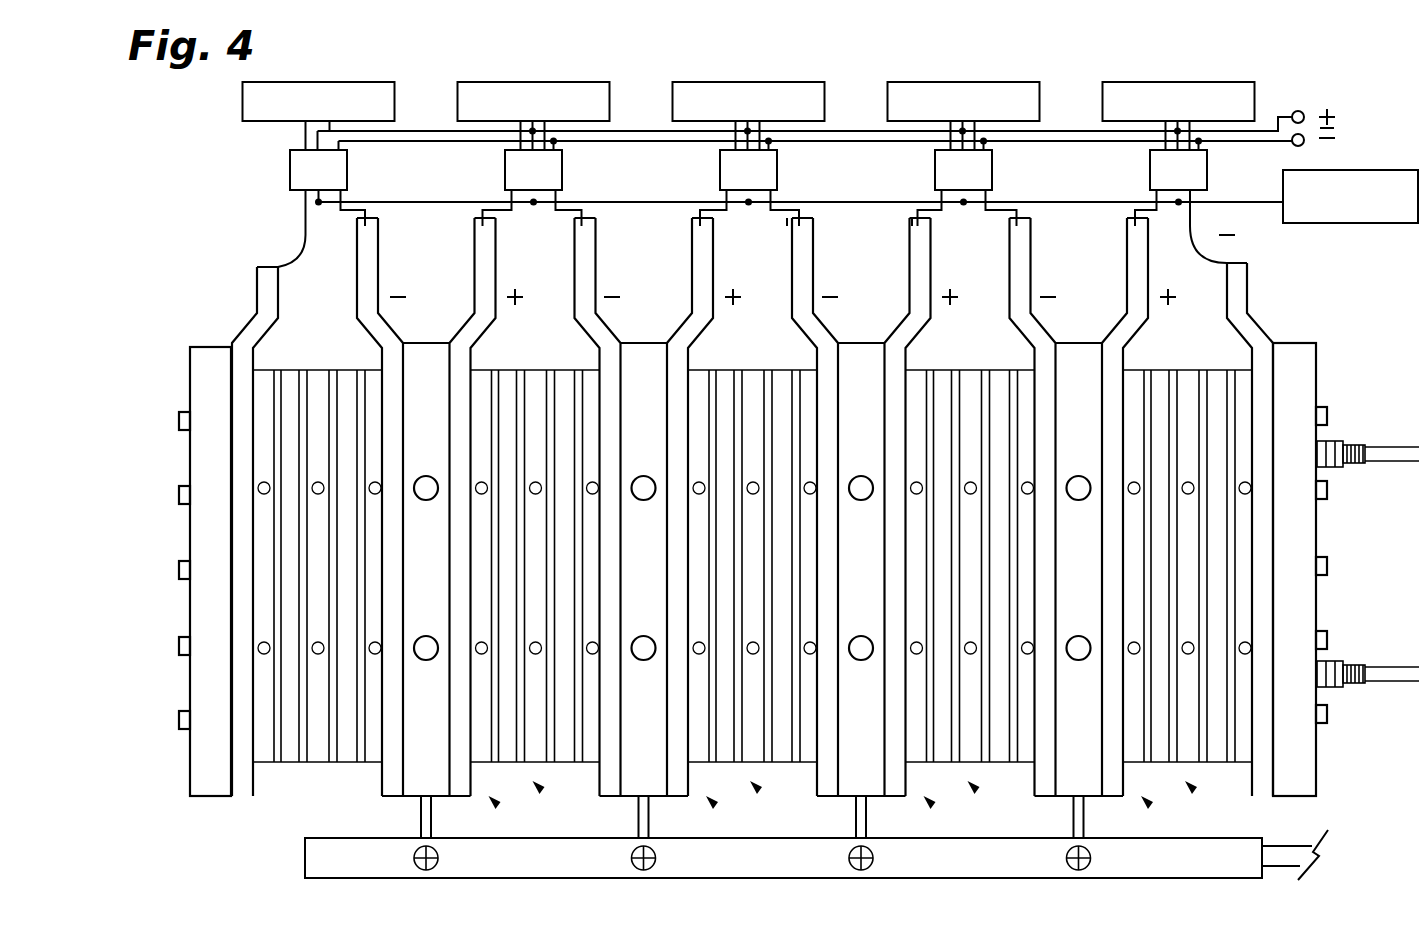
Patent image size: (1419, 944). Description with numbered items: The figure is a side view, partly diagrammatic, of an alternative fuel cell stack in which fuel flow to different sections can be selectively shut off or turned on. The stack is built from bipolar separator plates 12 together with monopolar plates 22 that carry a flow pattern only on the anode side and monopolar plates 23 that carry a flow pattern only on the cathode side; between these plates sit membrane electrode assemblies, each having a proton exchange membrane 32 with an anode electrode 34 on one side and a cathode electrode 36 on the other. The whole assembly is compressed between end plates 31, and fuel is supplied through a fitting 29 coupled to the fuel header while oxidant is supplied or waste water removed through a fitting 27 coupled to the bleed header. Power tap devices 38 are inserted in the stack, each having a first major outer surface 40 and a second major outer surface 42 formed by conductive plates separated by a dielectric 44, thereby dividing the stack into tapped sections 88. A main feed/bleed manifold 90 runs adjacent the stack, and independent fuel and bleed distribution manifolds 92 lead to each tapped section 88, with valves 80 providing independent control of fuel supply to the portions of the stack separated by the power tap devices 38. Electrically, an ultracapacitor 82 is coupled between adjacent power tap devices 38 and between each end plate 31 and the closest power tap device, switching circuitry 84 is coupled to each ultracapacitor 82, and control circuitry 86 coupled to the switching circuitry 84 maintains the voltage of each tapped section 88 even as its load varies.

The bipolar separator plate 12 is at (315, 378).
The monopolar plate 22 is at (250, 324).
The monopolar plate 23 is at (374, 372).
The fitting 27 is at (1326, 688).
The fitting 29 is at (1326, 468).
The end plate 31 is at (190, 588).
The proton exchange membrane 32 is at (285, 440).
The anode electrode 34 is at (273, 513).
The cathode electrode 36 is at (302, 378).
The power tap device 38 is at (498, 807).
The first major outer surface 40 is at (795, 263).
The second major outer surface 42 is at (920, 264).
The dielectric 44 is at (840, 345).
The valve 80 is at (439, 858).
The ultracapacitor 82 is at (334, 82).
The switching circuitry 84 is at (349, 174).
The control circuitry 86 is at (1315, 224).
The tapped section 88 is at (542, 793).
The main feed/bleed manifold 90 is at (355, 838).
The fuel and bleed distribution manifold 92 is at (433, 818).